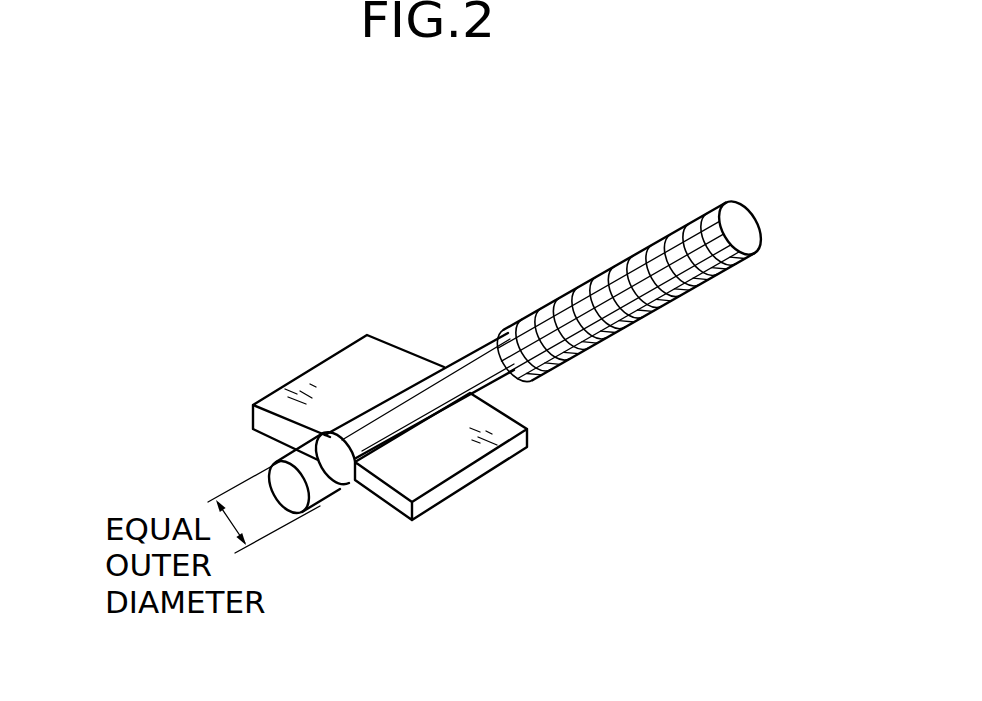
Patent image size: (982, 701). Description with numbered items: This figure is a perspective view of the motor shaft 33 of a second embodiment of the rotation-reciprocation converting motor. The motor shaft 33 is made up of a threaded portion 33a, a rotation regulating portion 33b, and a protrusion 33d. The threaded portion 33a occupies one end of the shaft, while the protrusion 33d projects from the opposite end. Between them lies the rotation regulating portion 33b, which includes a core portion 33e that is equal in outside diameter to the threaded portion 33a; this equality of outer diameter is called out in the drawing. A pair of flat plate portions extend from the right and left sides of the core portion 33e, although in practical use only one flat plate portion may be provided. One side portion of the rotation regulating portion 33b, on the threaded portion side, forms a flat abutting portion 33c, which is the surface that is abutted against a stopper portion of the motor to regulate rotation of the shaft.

The motor shaft 33 is at (435, 208).
The threaded portion 33a is at (608, 283).
The rotation regulating portion 33b is at (438, 432).
The flat abutting portion 33c is at (532, 441).
The protrusion 33d is at (313, 505).
The core portion 33e is at (402, 400).